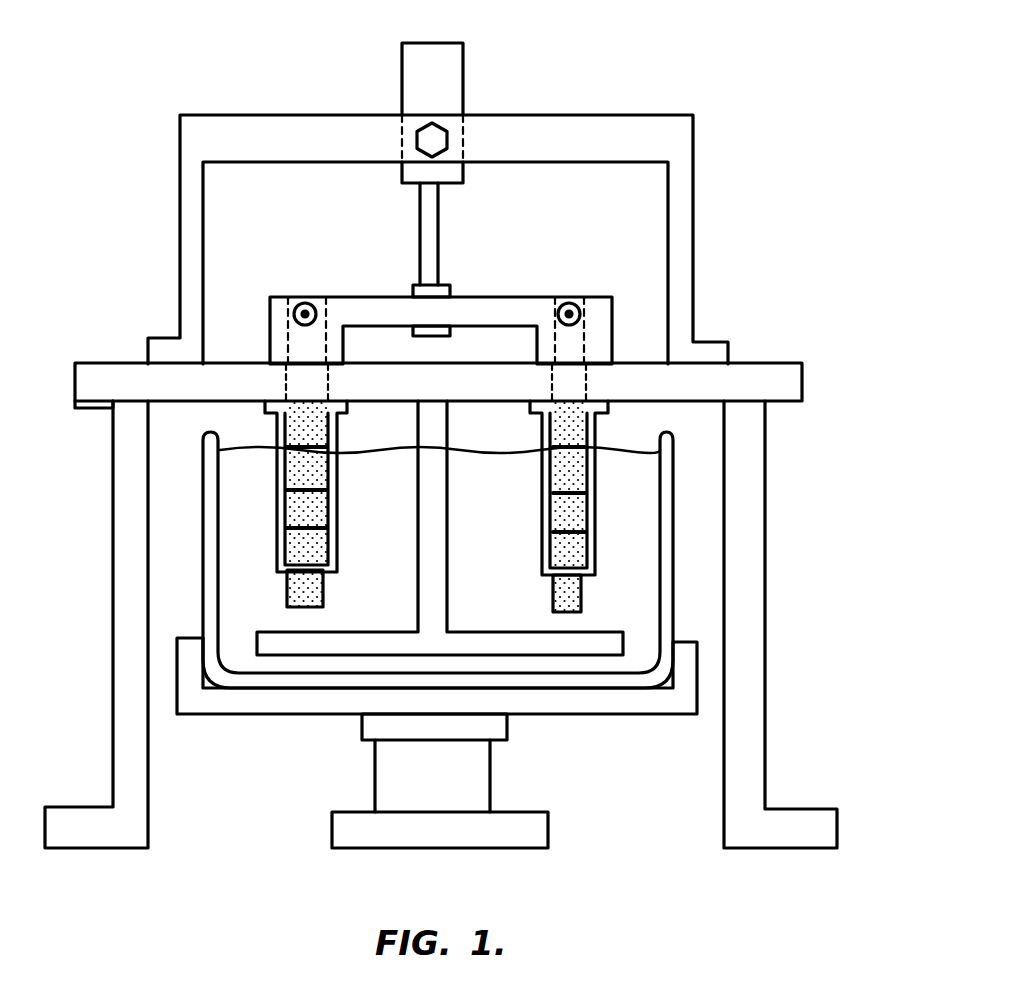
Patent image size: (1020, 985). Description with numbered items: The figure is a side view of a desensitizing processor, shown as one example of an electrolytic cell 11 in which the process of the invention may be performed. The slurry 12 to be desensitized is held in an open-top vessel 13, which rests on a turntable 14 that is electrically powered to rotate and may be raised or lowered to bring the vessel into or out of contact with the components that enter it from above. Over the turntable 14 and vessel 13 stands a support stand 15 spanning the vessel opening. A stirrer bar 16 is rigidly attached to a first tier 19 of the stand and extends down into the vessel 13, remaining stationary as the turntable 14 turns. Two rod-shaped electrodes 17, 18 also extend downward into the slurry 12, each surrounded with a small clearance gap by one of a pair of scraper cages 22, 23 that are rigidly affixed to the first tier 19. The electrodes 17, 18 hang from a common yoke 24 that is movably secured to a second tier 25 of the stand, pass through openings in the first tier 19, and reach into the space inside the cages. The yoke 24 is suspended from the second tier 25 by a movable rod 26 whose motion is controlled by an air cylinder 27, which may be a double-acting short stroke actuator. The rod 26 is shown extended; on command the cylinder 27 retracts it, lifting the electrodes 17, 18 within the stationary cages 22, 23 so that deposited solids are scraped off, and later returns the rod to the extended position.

The electrolytic cell 11 is at (772, 63).
The slurry 12 is at (507, 497).
The open-top vessel 13 is at (202, 530).
The turntable 14 is at (620, 714).
The support stand 15 is at (765, 610).
The stirrer bar 16 is at (447, 592).
The electrode 17 is at (324, 598).
The electrode 18 is at (582, 603).
The first tier 19 is at (768, 364).
The scraper cage 22 is at (350, 477).
The scraper cage 23 is at (596, 481).
The common yoke 24 is at (480, 297).
The second tier 25 is at (588, 115).
The movable rod 26 is at (438, 224).
The air cylinder 27 is at (463, 76).